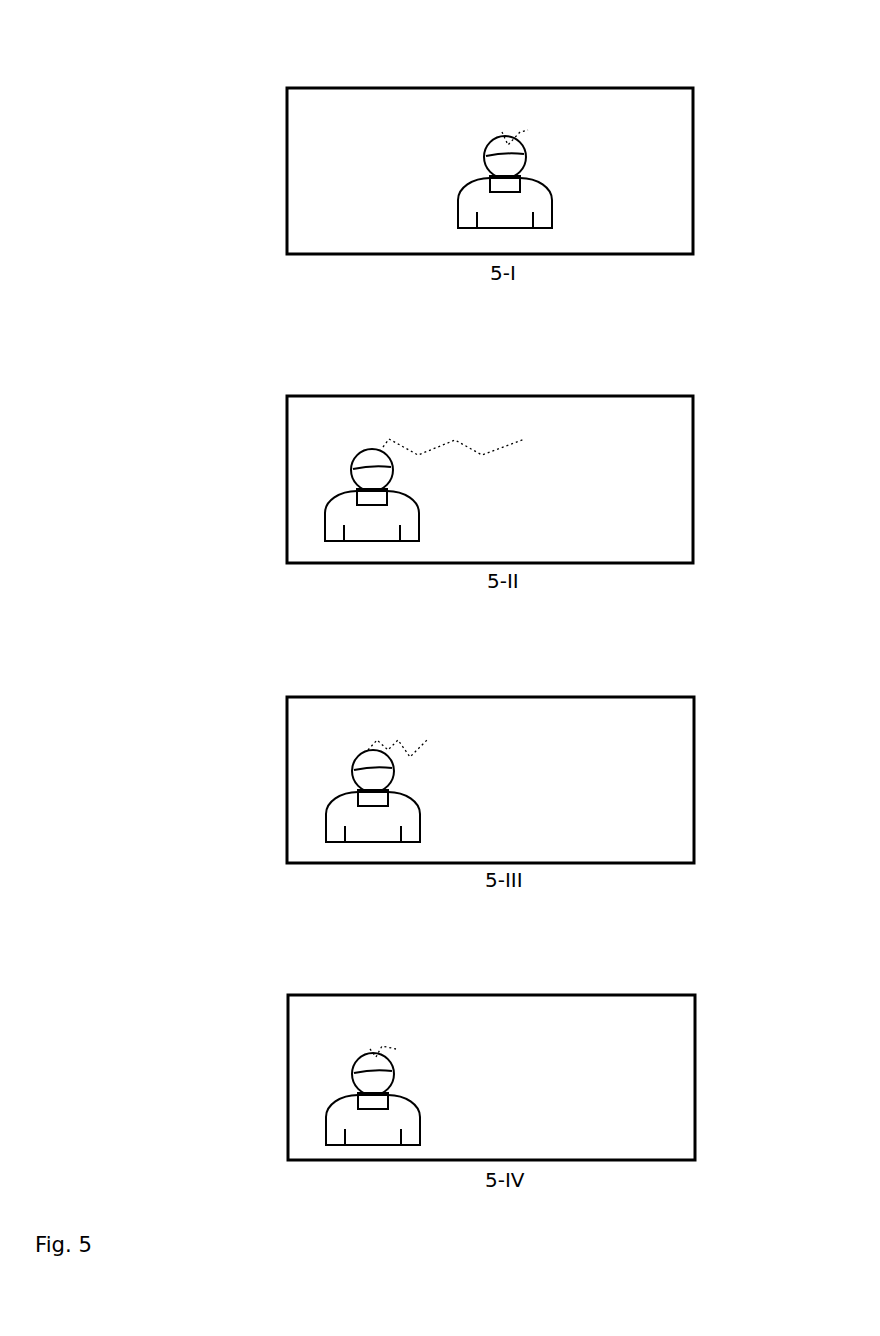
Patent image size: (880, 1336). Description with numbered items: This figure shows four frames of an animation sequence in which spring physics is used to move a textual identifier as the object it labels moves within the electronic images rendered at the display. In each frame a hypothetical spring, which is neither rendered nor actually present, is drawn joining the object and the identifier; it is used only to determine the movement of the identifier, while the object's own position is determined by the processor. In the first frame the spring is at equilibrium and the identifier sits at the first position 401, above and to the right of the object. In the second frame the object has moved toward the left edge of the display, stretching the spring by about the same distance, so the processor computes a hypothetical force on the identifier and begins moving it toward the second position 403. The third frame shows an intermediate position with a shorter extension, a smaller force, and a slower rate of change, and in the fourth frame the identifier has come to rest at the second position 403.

The first position 401 is at (575, 104).
The second position 403 is at (411, 1021).